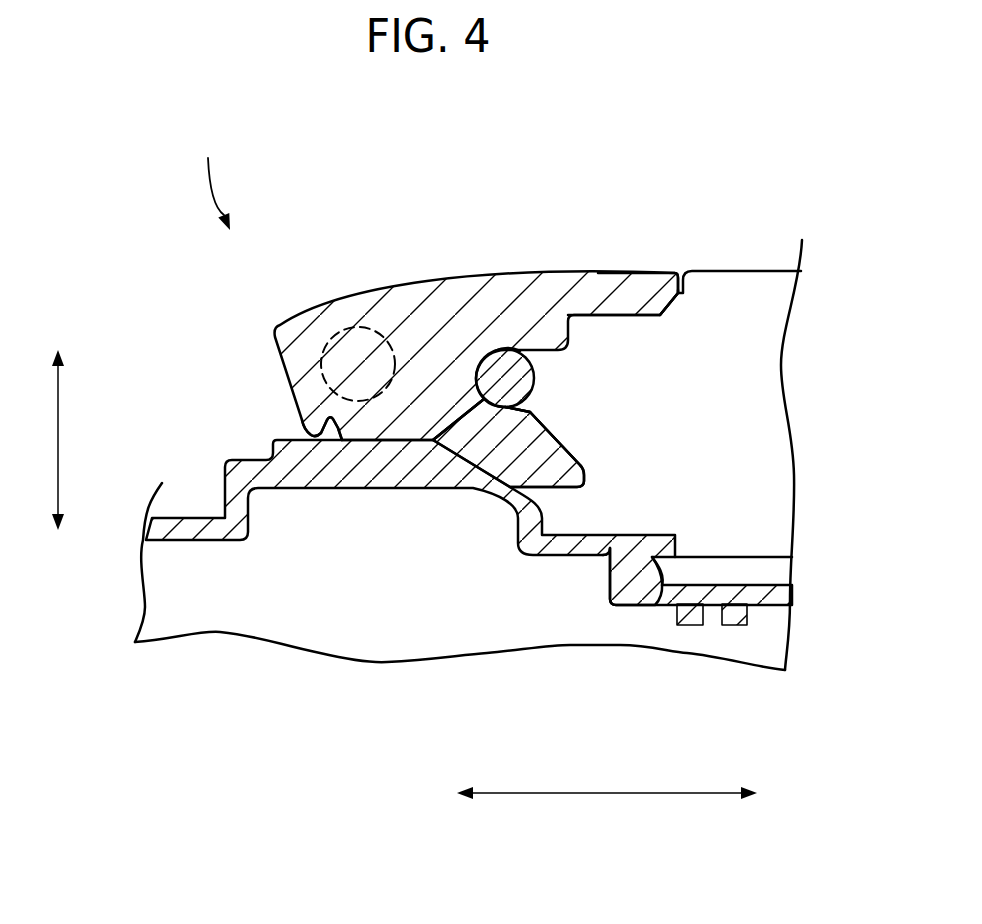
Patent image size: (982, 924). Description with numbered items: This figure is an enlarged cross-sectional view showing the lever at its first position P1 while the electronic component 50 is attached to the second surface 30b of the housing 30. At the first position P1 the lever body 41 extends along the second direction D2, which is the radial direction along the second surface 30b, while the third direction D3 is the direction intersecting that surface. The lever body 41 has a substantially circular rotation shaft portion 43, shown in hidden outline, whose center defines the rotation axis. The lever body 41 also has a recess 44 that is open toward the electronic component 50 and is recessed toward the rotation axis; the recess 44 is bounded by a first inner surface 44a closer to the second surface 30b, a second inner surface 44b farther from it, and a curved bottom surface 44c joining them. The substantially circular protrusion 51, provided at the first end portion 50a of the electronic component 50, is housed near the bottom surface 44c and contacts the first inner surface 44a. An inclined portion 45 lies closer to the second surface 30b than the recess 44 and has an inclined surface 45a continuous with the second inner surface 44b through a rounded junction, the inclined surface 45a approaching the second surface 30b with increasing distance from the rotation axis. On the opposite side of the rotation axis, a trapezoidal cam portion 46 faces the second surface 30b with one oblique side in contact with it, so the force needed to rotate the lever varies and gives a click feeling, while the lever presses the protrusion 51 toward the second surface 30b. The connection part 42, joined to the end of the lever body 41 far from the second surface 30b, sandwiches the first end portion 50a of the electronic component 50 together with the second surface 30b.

The housing 30 is at (683, 593).
The second surface 30b is at (637, 523).
The lever body 41 is at (392, 317).
The connection part 42 is at (598, 273).
The rotation shaft portion 43 is at (350, 357).
The recess 44 is at (476, 386).
The first inner surface 44a is at (525, 334).
The second inner surface 44b is at (503, 431).
The bottom surface 44c is at (470, 409).
The inclined portion 45 is at (552, 473).
The inclined surface 45a is at (580, 431).
The cam portion 46 is at (333, 420).
The electronic component 50 is at (690, 400).
The first end portion 50a is at (627, 350).
The protrusion 51 is at (513, 363).
The first position P1 is at (212, 179).
The second direction D2 is at (607, 810).
The third direction D3 is at (40, 440).